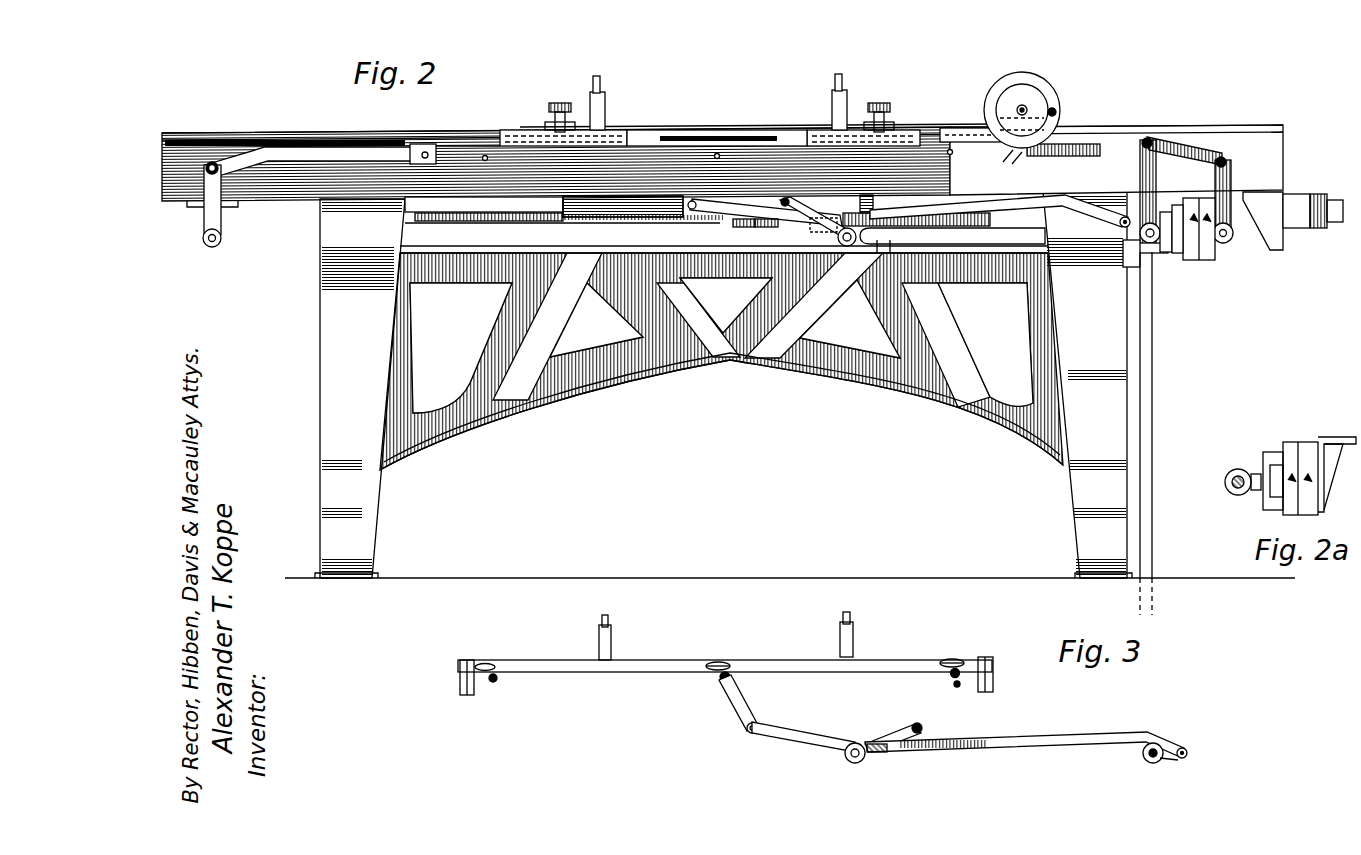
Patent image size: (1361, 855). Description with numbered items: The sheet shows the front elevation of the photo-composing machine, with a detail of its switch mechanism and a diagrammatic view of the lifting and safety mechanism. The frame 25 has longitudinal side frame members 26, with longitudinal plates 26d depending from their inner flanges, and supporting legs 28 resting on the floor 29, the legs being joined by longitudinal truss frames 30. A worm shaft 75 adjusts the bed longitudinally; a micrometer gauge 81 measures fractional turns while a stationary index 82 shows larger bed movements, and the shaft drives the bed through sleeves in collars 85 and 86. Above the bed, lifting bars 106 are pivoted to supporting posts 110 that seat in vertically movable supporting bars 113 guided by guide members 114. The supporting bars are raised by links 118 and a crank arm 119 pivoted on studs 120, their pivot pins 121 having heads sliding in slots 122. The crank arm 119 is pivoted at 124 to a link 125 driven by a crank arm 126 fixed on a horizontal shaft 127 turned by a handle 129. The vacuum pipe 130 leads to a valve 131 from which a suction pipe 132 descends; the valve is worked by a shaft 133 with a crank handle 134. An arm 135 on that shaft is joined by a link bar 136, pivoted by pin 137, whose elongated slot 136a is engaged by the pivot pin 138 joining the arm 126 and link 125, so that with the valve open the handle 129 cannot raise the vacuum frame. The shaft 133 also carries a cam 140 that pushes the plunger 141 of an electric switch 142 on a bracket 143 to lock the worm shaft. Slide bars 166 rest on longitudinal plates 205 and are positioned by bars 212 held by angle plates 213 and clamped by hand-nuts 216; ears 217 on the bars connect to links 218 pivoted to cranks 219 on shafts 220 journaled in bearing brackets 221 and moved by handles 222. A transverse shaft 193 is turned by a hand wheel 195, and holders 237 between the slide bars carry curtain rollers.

In FIG. 2, the frame 25 is at (320, 305).
In FIG. 2, the longitudinal side frame members 26 is at (273, 186).
In FIG. 2, the longitudinal plates 26d is at (590, 223).
In FIG. 2, the supporting legs 28 is at (378, 492).
In FIG. 2, the floor or other support 29 is at (503, 577).
In FIG. 2, the longitudinal truss frames 30 is at (598, 384).
In FIG. 2, the worm shaft 75 is at (445, 254).
In FIG. 2, the micrometer gauge 81 is at (1316, 194).
In FIG. 2, the stationary index mark 82 is at (1295, 194).
In FIG. 2, the collar 85 is at (772, 228).
In FIG. 2, the collar 86 is at (745, 227).
In FIG. 2, the lifting bars 106 is at (598, 76).
In FIG. 3, the lifting bars 106 is at (608, 620).
In FIG. 2, the supporting posts 110 is at (605, 96).
In FIG. 3, the supporting posts 110 is at (611, 647).
In FIG. 3, the supporting bars 113 is at (584, 670).
In FIG. 3, the guide members 114 is at (466, 696).
In FIG. 3, the links 118 is at (488, 682).
In FIG. 2, the crank arm 119 is at (694, 212).
In FIG. 3, the crank arm 119 is at (730, 702).
In FIG. 2, the studs 120 is at (485, 156).
In FIG. 3, the studs 120 is at (499, 679).
In FIG. 3, the pivot pins 121 is at (715, 662).
In FIG. 3, the slots 122 is at (490, 664).
In FIG. 2, the pivotal connection 124 is at (670, 226).
In FIG. 3, the pivotal connection 124 is at (745, 735).
In FIG. 2, the link 125 is at (661, 317).
In FIG. 3, the link 125 is at (778, 740).
In FIG. 2, the crank arm 126 is at (805, 240).
In FIG. 3, the crank arm 126 is at (872, 762).
In FIG. 2, the horizontal shaft 127 is at (846, 248).
In FIG. 3, the horizontal shaft 127 is at (852, 764).
In FIG. 2, the handle 129 is at (800, 222).
In FIG. 3, the handle 129 is at (906, 724).
In FIG. 2, the pipe 130 is at (930, 244).
In FIG. 2, the valve 131 is at (1122, 258).
In FIG. 2, the suction pipe 132 is at (1153, 360).
In FIG. 2, the shaft 133 is at (1162, 248).
In FIG. 3, the shaft 133 is at (1144, 760).
In FIG. 2, the crank handle 134 is at (1140, 174).
In FIG. 2, the arm 135 is at (1119, 224).
In FIG. 3, the arm 135 is at (1165, 762).
In FIG. 2, the link bar 136 is at (1008, 208).
In FIG. 3, the link bar 136 is at (1065, 736).
In FIG. 2, the elongated slot 136a is at (875, 200).
In FIG. 3, the elongated slot 136a is at (901, 764).
In FIG. 3, the pin 137 is at (1183, 746).
In FIG. 3, the pivot pin 138 is at (882, 743).
In FIG. 2A, the cam 140 is at (1237, 468).
In FIG. 2, the plunger 141 is at (1166, 210).
In FIG. 2A, the plunger 141 is at (1255, 496).
In FIG. 2, the electric switch 142 is at (1206, 260).
In FIG. 2A, the electric switch 142 is at (1291, 440).
In FIG. 2A, the bracket 143 is at (1340, 436).
In FIG. 2, the slide bars 166 is at (552, 124).
In FIG. 2, the transverse shaft 193 is at (1024, 106).
In FIG. 2, the hand wheel 195 is at (1055, 100).
In FIG. 2, the longitudinal plates 205 is at (332, 137).
In FIG. 2, the bars 212 is at (450, 142).
In FIG. 2, the angle plates 213 is at (502, 138).
In FIG. 2, the hand-nuts 216 is at (560, 103).
In FIG. 2, the ears 217 is at (398, 140).
In FIG. 2, the links 218 is at (278, 150).
In FIG. 2, the cranks 219 is at (222, 222).
In FIG. 2, the shafts 220 is at (214, 248).
In FIG. 2, the bearing brackets 221 is at (200, 210).
In FIG. 2, the handles 222 is at (212, 162).
In FIG. 2, the holders 237 is at (748, 125).